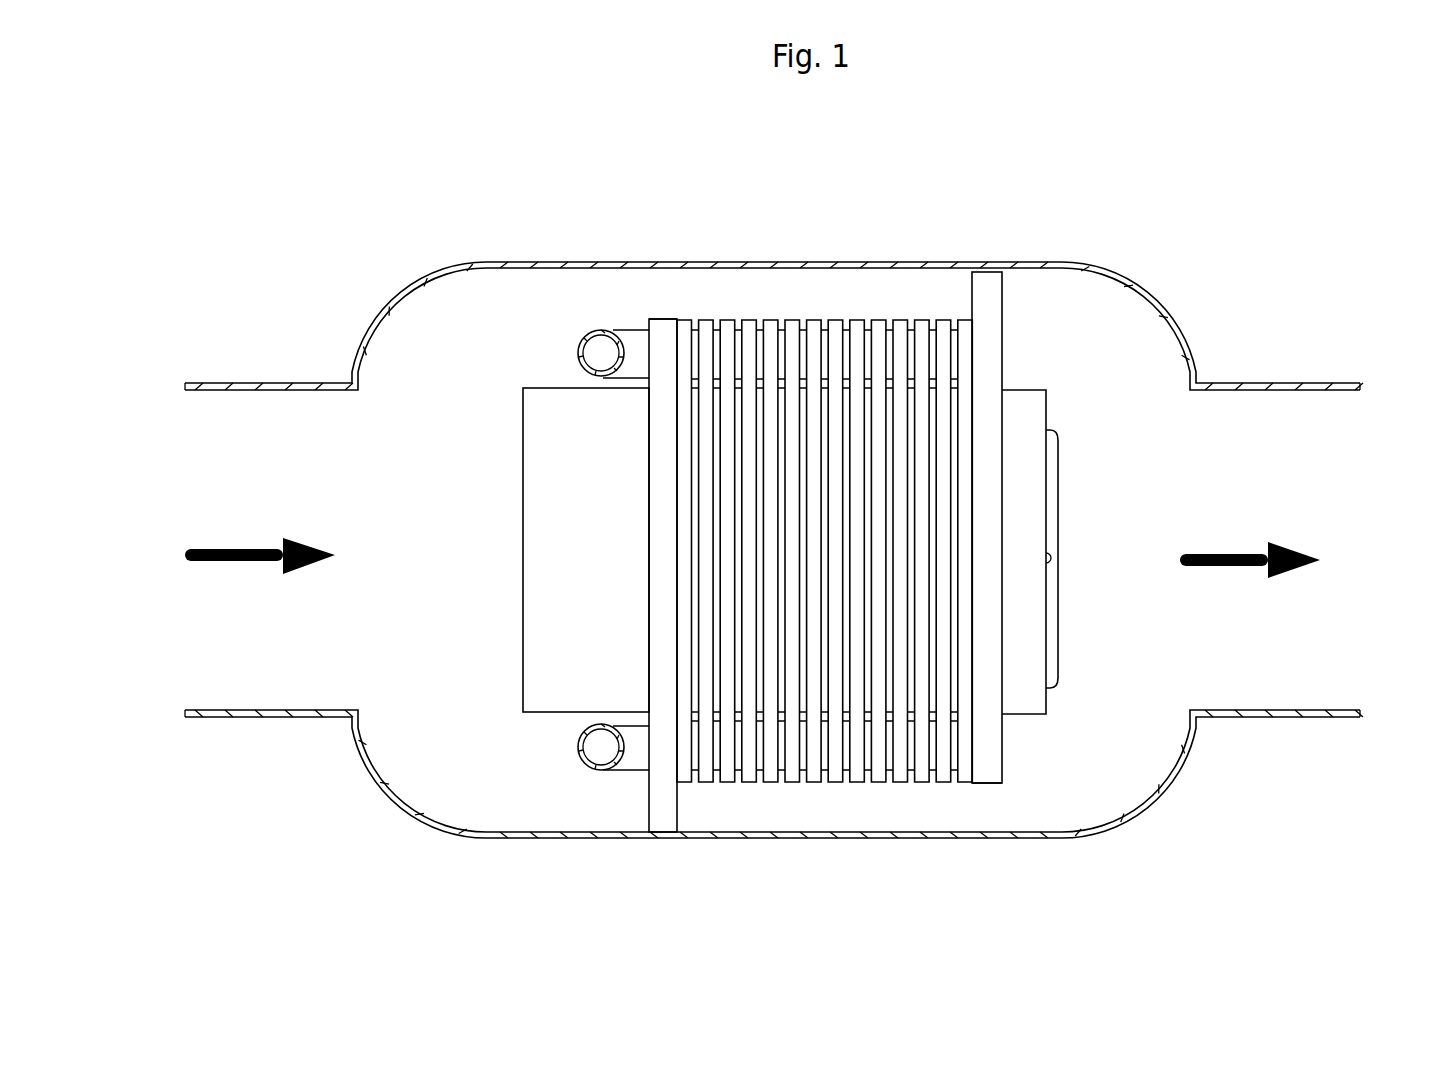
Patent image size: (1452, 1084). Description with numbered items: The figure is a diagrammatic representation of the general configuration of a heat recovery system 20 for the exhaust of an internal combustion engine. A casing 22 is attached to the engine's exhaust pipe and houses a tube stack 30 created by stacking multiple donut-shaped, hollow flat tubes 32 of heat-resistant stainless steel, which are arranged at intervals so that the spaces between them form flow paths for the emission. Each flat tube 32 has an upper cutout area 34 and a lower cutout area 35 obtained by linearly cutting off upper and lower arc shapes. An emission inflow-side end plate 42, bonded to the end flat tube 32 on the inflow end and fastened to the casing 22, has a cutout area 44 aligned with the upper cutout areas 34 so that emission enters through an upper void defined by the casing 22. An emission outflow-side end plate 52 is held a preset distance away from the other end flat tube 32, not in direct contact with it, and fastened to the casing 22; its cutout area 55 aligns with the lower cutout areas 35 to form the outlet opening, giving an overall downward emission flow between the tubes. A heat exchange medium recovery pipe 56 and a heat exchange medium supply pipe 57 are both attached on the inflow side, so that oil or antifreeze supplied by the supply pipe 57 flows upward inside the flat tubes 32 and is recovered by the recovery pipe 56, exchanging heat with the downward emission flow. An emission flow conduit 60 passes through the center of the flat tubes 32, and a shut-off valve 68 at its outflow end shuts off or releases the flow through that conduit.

The heat recovery system 20 is at (1140, 205).
The casing 22 is at (490, 260).
The tube stack 30 is at (960, 210).
The flat tube 32 is at (790, 390).
The upper cutout area 34 is at (918, 318).
The lower cutout area 35 is at (768, 783).
The emission inflow-side end plate 42 is at (663, 355).
The cutout area 44 is at (662, 318).
The emission outflow-side end plate 52 is at (990, 332).
The cutout area 55 is at (990, 785).
The heat exchange medium recovery pipe 56 is at (600, 331).
The heat exchange medium supply pipe 57 is at (630, 773).
The emission flow conduit 60 is at (528, 383).
The shut-off valve 68 is at (1058, 500).